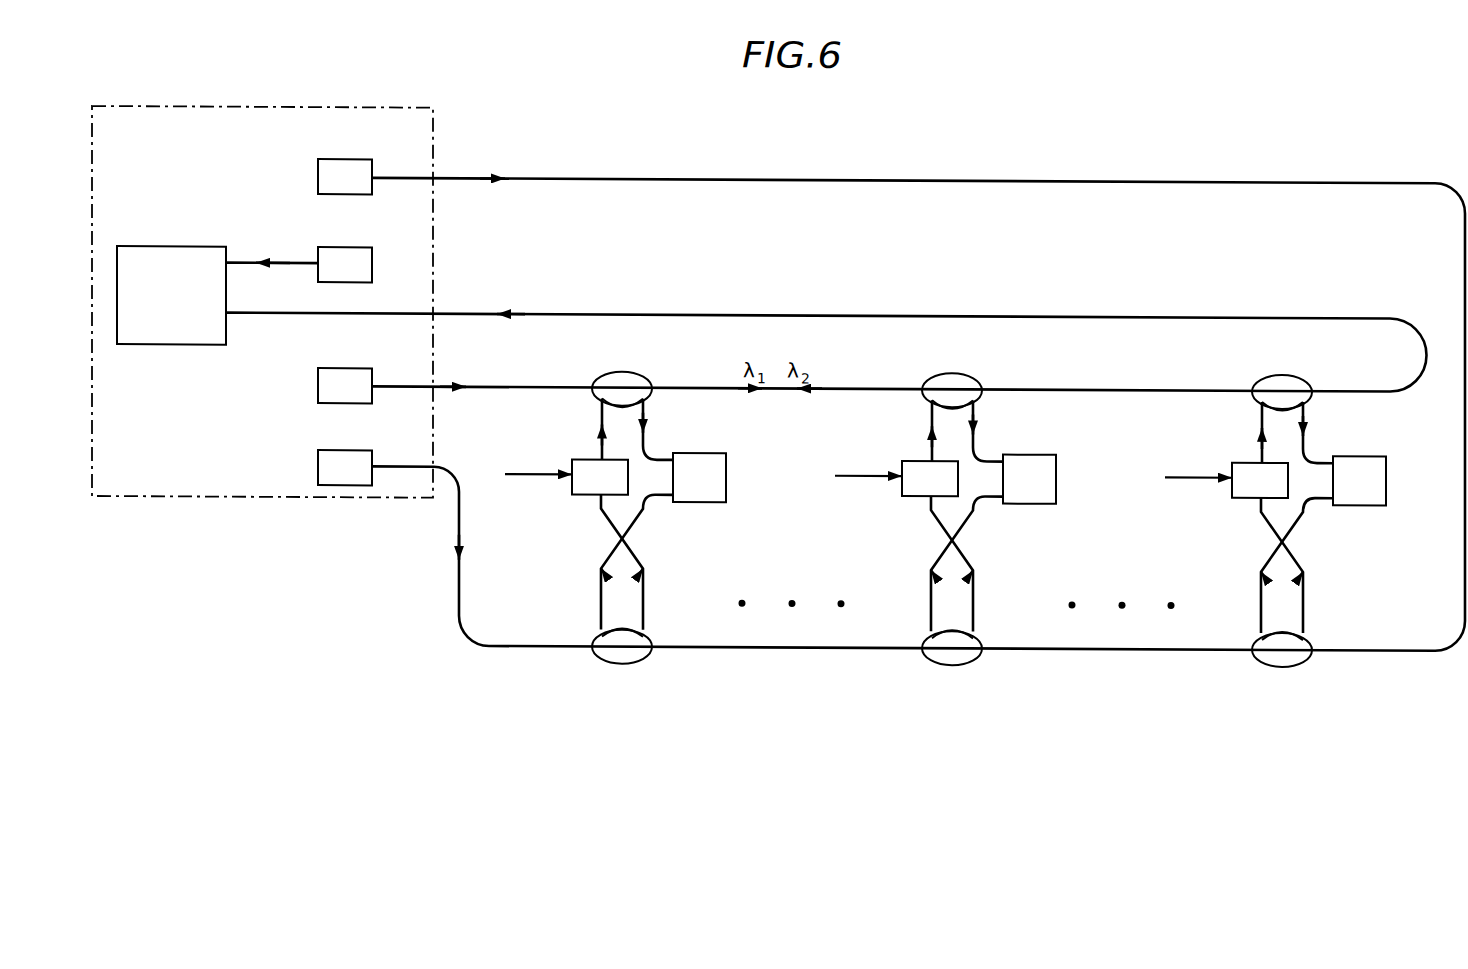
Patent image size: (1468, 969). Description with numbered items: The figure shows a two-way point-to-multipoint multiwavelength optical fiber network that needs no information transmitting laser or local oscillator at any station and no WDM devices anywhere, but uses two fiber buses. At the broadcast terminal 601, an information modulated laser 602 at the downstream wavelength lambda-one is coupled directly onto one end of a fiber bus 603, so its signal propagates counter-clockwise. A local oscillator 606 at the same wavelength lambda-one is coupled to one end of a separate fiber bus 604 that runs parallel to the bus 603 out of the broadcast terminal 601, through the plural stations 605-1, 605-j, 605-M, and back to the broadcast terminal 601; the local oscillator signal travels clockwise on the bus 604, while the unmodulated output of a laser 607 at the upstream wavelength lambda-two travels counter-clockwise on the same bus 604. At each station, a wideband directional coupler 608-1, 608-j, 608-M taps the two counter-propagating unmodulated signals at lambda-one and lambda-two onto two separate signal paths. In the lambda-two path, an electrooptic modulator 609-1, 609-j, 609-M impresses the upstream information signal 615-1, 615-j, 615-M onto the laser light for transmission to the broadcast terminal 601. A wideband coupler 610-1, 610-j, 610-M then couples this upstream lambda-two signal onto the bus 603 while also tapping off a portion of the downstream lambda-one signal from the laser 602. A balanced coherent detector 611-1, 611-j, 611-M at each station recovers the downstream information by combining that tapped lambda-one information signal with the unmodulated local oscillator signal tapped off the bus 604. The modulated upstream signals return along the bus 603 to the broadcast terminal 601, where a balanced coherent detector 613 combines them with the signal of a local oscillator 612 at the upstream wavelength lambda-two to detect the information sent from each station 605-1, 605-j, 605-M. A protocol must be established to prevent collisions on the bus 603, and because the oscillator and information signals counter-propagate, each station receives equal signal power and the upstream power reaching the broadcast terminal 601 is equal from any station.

The broadcast terminal 601 is at (130, 107).
The information modulated laser 602 is at (340, 370).
The fiber bus 603 is at (503, 386).
The fiber bus 604 is at (628, 178).
The station 605-M is at (624, 556).
The station 605-j is at (951, 557).
The station 605-1 is at (1282, 559).
The local oscillator 606 is at (340, 162).
The laser 607 is at (340, 452).
The wideband directional coupler 608-M is at (620, 664).
The wideband directional coupler 608-j is at (950, 664).
The wideband directional coupler 608-1 is at (1280, 664).
The electrooptic modulator 609-M is at (583, 459).
The electrooptic modulator 609-j is at (913, 459).
The electrooptic modulator 609-1 is at (1243, 459).
The wideband coupler 610-M is at (622, 371).
The wideband coupler 610-j is at (952, 371).
The wideband coupler 610-1 is at (1282, 371).
The balanced coherent detector 611-M is at (716, 451).
The balanced coherent detector 611-j is at (1044, 452).
The balanced coherent detector 611-1 is at (1375, 454).
The local oscillator 612 is at (340, 250).
The balanced coherent detector 613 is at (186, 347).
The upstream information signal 615-M is at (533, 480).
The upstream information signal 615-j is at (863, 480).
The upstream information signal 615-1 is at (1193, 480).